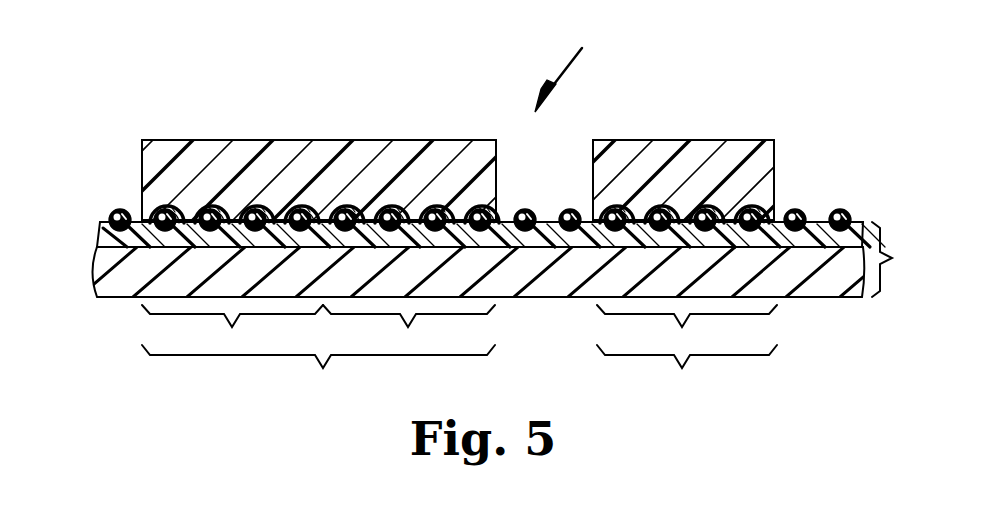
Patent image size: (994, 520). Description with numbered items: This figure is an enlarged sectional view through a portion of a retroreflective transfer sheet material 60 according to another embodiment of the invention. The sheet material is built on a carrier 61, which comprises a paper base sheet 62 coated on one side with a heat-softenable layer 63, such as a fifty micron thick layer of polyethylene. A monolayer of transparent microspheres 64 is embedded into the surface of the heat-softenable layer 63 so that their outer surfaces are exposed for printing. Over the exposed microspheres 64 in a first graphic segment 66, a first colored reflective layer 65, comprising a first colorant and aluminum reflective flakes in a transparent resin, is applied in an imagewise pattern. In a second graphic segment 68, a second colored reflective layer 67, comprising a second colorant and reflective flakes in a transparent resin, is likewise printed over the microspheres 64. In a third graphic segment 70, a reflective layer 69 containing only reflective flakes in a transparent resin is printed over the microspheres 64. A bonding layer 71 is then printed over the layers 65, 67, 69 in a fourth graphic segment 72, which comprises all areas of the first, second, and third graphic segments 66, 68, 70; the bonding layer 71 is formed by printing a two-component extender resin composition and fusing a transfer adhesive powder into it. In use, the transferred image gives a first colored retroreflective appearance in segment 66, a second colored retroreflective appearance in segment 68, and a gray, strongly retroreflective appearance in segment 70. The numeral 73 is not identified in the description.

The retroreflective transfer sheet material 60 is at (567, 68).
The carrier 61 is at (898, 259).
The base sheet 62 is at (105, 286).
The heat-softenable layer 63 is at (101, 238).
The transparent microspheres 64 is at (117, 210).
The first colored reflective layer 65 is at (226, 198).
The first graphic segment 66 is at (232, 331).
The second colored reflective layer 67 is at (745, 200).
The second graphic segment 68 is at (687, 331).
The reflective layer 69 is at (378, 198).
The third graphic segment 70 is at (409, 330).
The bonding layer 71 is at (397, 158).
The fourth graphic segment 72 is at (459, 371).
The component top surface 73 is at (293, 140).